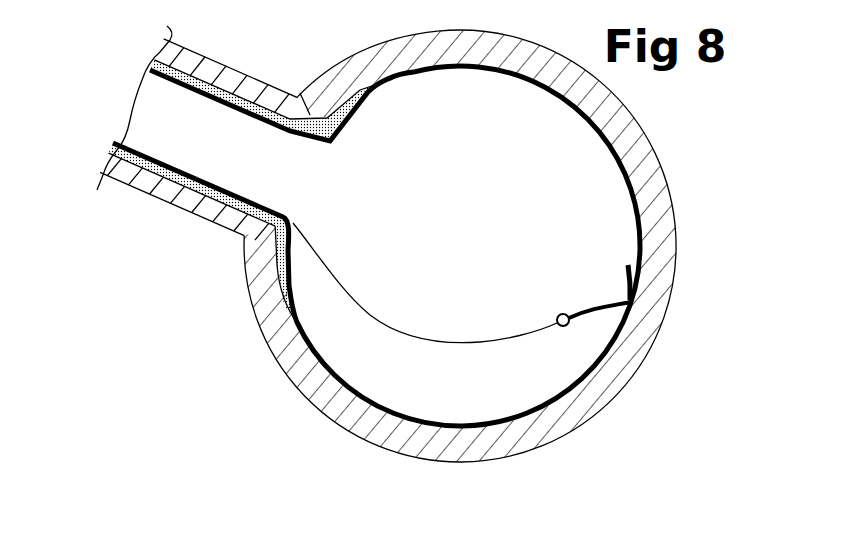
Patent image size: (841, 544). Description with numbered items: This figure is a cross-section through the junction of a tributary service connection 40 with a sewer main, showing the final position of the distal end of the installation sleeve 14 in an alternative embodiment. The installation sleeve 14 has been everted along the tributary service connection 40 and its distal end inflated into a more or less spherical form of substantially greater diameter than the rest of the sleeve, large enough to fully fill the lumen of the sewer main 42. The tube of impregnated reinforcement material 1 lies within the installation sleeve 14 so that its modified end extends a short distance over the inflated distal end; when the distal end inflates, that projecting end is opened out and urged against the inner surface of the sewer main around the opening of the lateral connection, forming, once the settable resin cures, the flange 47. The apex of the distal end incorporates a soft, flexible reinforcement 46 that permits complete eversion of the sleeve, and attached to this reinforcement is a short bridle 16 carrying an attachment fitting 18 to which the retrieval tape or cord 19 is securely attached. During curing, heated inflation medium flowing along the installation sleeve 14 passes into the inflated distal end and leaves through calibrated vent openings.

The tube of impregnated reinforcement material 1 is at (200, 67).
The installation sleeve 14 is at (200, 90).
The short bridle 16 is at (597, 307).
The attachment fitting 18 is at (568, 326).
The retrieval tape or cord 19 is at (440, 343).
The tributary service connection 40 is at (173, 197).
The housing wall 42 is at (327, 393).
The reinforcement 46 is at (632, 285).
The flange 47 is at (243, 280).